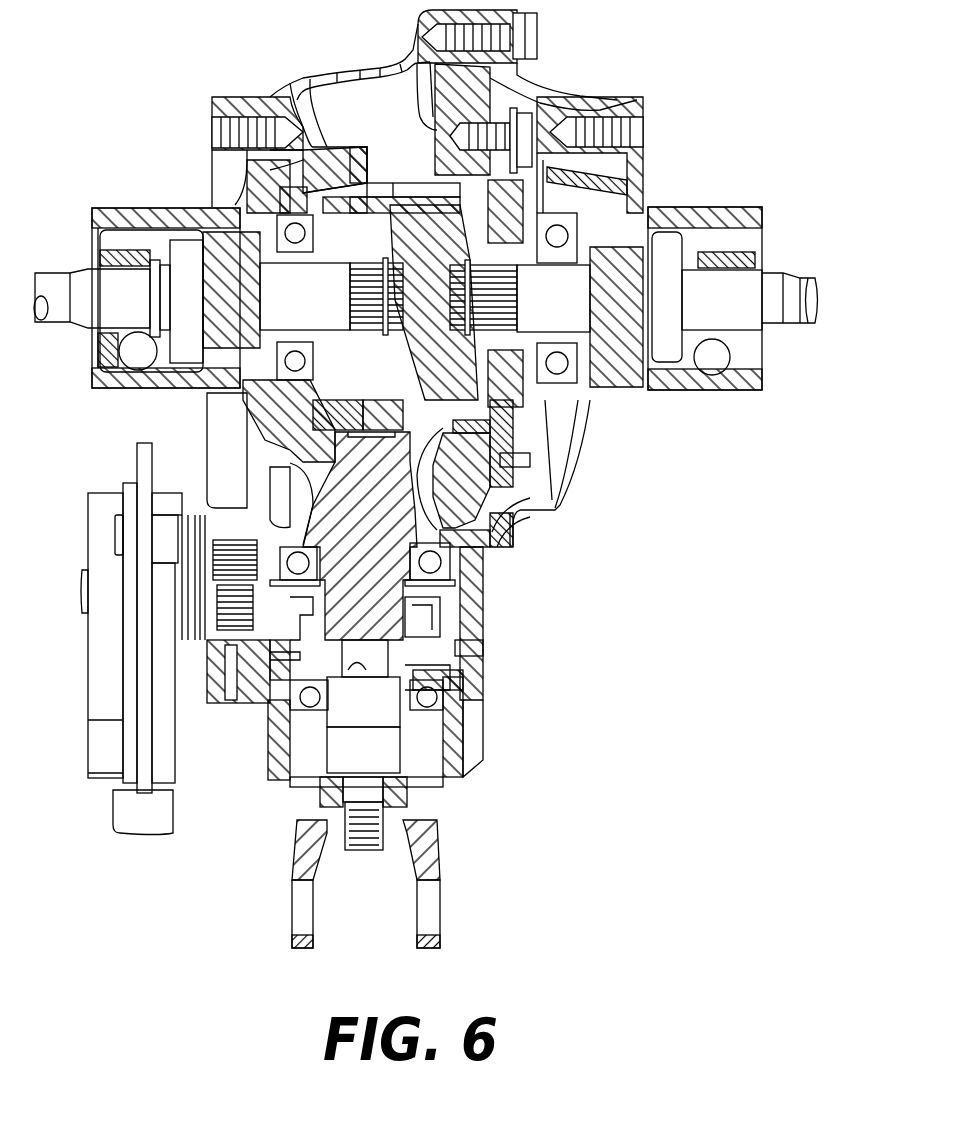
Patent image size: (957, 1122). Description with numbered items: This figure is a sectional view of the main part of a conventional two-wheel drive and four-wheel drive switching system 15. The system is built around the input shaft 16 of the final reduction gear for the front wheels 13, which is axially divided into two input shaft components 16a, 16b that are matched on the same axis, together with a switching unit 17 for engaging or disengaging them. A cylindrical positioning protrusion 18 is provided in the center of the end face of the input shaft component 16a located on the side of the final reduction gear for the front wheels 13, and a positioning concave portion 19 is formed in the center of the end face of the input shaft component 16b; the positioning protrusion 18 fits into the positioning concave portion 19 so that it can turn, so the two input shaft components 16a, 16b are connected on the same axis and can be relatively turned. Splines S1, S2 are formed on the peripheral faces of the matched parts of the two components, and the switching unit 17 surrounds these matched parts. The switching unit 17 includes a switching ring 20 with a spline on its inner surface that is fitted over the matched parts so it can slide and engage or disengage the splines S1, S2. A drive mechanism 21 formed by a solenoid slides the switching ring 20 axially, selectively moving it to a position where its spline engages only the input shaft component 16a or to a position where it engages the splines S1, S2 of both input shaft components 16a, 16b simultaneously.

The final reduction gear for the front wheels 13 is at (590, 456).
The two-wheel drive and four-wheel drive switching system 15 is at (467, 734).
The input shaft 16 is at (461, 690).
The input shaft component 16a is at (487, 575).
The input shaft component 16b is at (437, 838).
The switching unit 17 is at (445, 619).
The positioning protrusion 18 is at (467, 710).
The positioning concave portion 19 is at (345, 662).
The switching ring 20 is at (480, 650).
The drive mechanism 21 is at (237, 585).
The spline S1 is at (467, 678).
The spline S2 is at (300, 655).